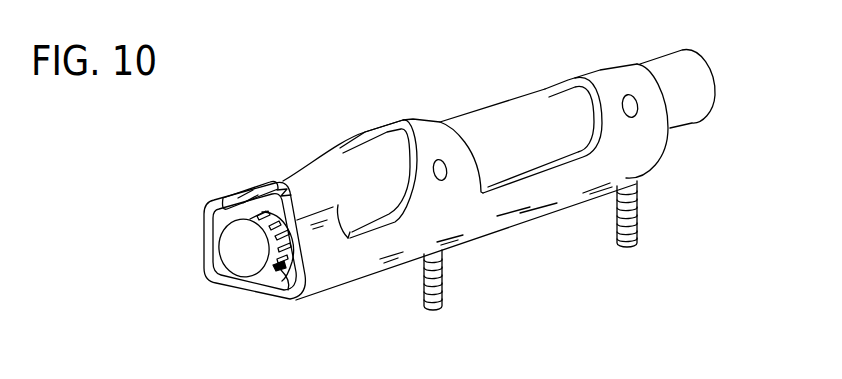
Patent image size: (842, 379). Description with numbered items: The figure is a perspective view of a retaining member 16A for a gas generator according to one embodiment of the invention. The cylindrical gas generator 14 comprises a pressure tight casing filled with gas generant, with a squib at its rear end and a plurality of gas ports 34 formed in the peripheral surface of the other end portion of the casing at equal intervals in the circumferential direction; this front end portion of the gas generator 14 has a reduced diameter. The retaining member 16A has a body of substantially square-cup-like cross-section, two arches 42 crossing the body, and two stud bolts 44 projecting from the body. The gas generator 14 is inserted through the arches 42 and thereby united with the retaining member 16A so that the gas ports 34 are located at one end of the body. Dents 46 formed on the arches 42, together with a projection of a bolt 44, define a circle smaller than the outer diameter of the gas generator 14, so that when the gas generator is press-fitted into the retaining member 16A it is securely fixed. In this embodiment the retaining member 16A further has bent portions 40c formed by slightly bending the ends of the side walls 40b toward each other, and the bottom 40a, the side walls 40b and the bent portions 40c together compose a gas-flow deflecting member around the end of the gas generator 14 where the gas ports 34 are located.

The retaining member 16A is at (653, 182).
The gas generator 14 is at (497, 117).
The arches 42 is at (402, 130).
The dents 46 is at (446, 175).
The bolts 44 is at (443, 290).
The side walls 40b is at (199, 226).
The bent portions 40c is at (254, 192).
The bottom 40a is at (256, 284).
The gas ports 34 is at (283, 284).